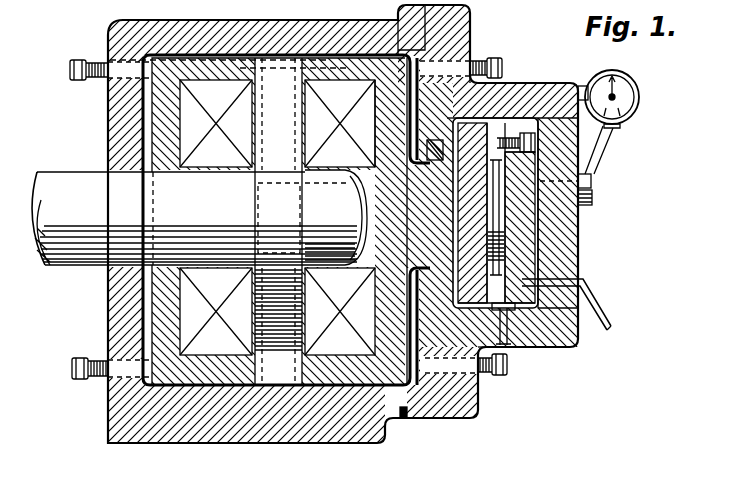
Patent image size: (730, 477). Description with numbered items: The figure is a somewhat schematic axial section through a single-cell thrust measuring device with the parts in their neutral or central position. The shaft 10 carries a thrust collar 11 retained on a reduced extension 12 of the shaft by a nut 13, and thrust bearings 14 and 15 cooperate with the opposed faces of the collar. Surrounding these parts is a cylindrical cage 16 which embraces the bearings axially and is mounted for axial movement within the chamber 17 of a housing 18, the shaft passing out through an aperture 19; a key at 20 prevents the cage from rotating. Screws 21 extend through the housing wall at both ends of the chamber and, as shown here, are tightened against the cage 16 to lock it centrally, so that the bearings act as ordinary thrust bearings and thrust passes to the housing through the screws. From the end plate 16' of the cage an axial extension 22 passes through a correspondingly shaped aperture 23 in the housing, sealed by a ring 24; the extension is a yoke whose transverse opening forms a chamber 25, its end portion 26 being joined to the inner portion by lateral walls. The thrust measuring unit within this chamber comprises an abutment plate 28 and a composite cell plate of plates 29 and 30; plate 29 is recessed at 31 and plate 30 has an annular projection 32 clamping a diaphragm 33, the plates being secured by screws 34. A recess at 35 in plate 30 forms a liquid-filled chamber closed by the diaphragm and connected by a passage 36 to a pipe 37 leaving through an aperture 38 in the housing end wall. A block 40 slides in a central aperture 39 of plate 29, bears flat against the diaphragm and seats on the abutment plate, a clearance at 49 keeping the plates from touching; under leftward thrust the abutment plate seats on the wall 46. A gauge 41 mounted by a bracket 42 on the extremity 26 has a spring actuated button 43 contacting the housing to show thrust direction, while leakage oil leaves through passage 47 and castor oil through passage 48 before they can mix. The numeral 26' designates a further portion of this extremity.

The shaft 10 is at (60, 183).
The thrust collar 11 is at (297, 140).
The reduced extension 12 is at (275, 175).
The nut 13 is at (327, 262).
The thrust bearing 14 is at (220, 157).
The thrust bearing 15 is at (333, 155).
The cylindrical cage 16 is at (320, 224).
The end plate 16' is at (362, 123).
The chamber 17 is at (147, 90).
The housing 18 is at (470, 32).
The aperture 19 is at (108, 285).
The key 20 is at (277, 56).
The screws 21 is at (79, 60).
The axial extension 22 is at (505, 250).
The aperture 23 is at (443, 150).
The ring 24 is at (433, 270).
The chamber 25 is at (562, 200).
The end portion 26 is at (602, 202).
The plug 26' is at (584, 183).
The abutment plate 28 is at (472, 130).
The plate 29 is at (509, 338).
The plate 30 is at (548, 323).
The recess 31 is at (496, 289).
The annular projection 32 is at (512, 258).
The diaphragm 33 is at (500, 234).
The screws 34 is at (532, 126).
The chamber 35 is at (507, 218).
The passage 36 is at (583, 279).
The pipe 37 is at (610, 328).
The aperture 38 is at (577, 318).
The aperture 39 is at (492, 180).
The block 40 is at (496, 205).
The gauge 41 is at (635, 92).
The bracket 42 is at (603, 143).
The spring actuated button 43 is at (586, 86).
The left hand wall 46 is at (447, 118).
The passage 47 is at (405, 418).
The passage 48 is at (507, 347).
The clearance 49 is at (500, 330).